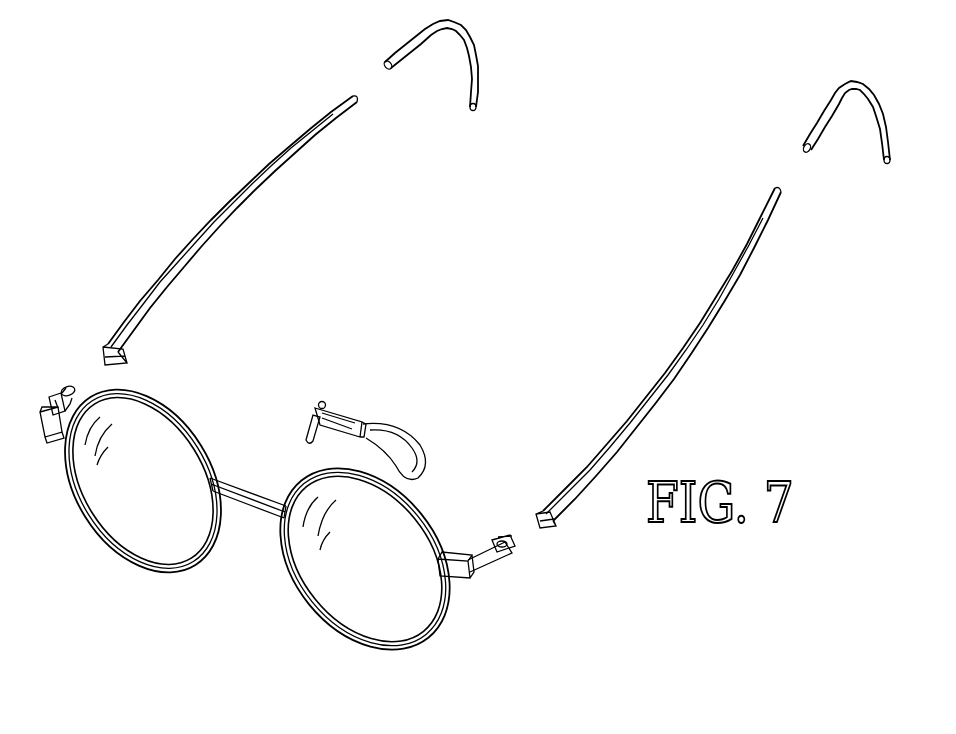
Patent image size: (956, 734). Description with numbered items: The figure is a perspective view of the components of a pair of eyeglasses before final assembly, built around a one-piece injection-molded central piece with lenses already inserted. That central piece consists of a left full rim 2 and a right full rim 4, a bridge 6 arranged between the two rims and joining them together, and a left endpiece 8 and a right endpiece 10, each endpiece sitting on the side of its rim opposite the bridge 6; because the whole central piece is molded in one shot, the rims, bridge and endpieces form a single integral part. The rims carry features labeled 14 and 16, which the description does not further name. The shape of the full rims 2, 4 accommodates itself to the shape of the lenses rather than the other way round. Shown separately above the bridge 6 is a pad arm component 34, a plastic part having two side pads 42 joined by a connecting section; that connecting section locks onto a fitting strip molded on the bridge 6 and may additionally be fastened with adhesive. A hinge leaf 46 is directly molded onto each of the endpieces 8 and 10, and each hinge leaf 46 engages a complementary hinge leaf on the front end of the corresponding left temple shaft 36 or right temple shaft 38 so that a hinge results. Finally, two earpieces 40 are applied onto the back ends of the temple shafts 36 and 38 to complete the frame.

The left full rim 2 is at (152, 496).
The right full rim 4 is at (352, 571).
The bridge 6 is at (250, 487).
The left endpiece 8 is at (49, 437).
The right endpiece 10 is at (451, 558).
The left rim groove 14 is at (188, 545).
The right rim groove 16 is at (316, 570).
The pad arm component 34 is at (363, 421).
The left temple shaft 36 is at (232, 203).
The right temple shaft 38 is at (683, 358).
The earpiece 40 is at (408, 50).
The side pad 42 is at (306, 441).
The hinge leaf 46 is at (52, 406).